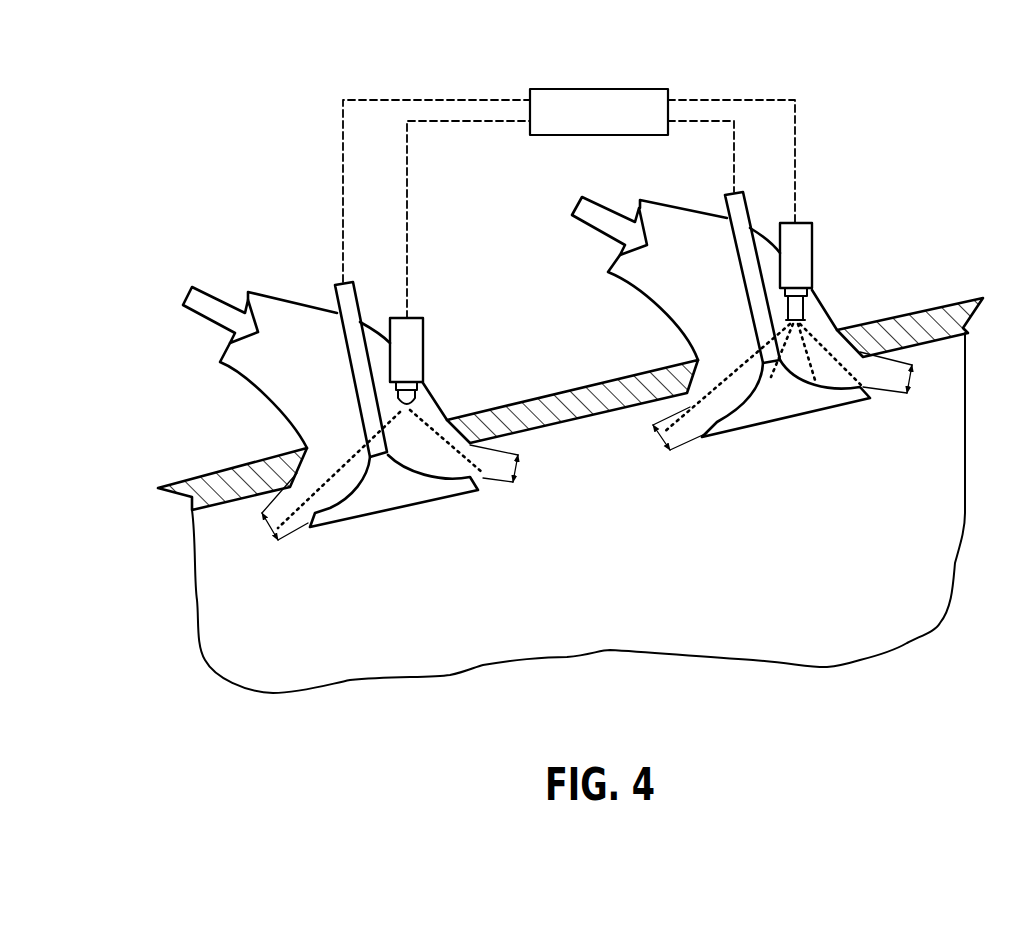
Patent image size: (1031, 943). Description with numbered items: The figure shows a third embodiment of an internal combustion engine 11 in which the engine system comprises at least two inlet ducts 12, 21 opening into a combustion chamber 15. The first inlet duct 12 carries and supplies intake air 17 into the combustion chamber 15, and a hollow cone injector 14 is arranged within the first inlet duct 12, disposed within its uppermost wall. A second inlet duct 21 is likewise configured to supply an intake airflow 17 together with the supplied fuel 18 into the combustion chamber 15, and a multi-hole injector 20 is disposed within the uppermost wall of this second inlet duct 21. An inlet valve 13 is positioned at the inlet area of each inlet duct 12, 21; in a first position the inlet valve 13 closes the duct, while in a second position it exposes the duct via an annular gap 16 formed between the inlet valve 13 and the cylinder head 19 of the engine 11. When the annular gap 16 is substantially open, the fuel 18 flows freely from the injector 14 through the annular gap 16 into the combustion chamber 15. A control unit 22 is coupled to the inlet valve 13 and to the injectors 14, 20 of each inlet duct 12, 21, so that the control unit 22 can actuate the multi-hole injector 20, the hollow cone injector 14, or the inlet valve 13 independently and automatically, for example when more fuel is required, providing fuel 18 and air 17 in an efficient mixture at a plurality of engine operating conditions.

The internal combustion engine 11 is at (258, 138).
The inlet duct 12 is at (247, 373).
The inlet valve 13 is at (417, 508).
The hollow cone injector 14 is at (425, 320).
The combustion chamber 15 is at (578, 513).
The annular gap 16 is at (265, 538).
The intake air 17 is at (210, 296).
The fuel 18 is at (337, 463).
The cylinder head 19 is at (923, 310).
The multi-hole injector 20 is at (815, 247).
The second inlet duct 21 is at (635, 285).
The control unit 22 is at (569, 203).